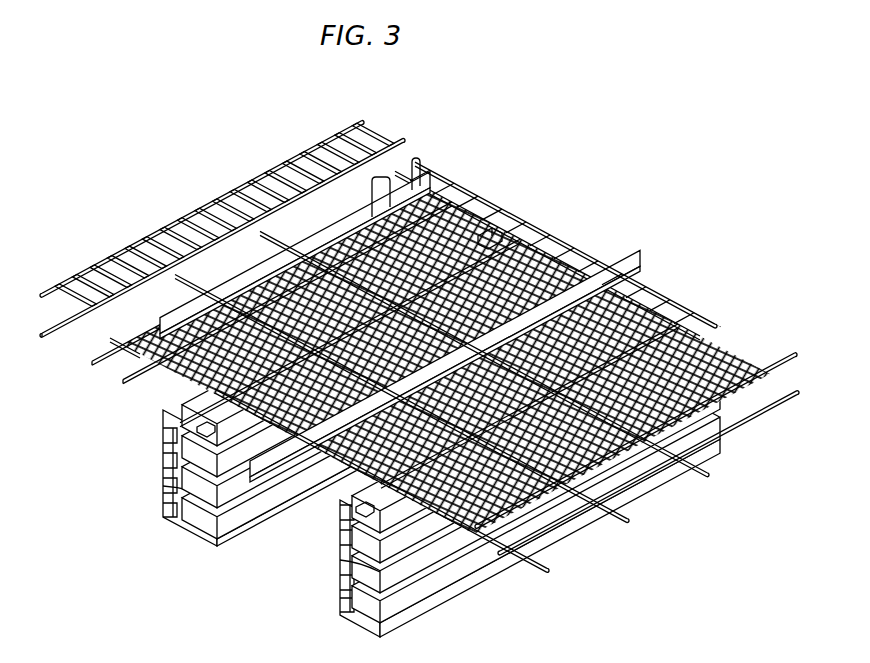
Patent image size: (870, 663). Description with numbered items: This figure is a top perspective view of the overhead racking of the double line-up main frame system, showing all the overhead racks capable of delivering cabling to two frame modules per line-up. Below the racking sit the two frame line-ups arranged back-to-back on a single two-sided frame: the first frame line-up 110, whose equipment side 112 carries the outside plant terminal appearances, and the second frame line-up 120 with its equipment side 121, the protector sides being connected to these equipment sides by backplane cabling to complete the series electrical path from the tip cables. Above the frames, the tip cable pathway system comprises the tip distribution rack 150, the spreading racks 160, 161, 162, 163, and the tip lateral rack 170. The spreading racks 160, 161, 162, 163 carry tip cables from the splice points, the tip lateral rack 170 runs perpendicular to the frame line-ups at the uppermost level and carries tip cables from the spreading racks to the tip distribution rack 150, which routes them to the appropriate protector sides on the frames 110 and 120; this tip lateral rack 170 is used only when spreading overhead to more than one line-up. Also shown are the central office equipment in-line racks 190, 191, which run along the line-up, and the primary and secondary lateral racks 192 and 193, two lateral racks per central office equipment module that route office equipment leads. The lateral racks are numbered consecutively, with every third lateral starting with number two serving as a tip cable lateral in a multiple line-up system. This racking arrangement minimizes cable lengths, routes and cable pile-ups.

The first frame line-up 110 is at (352, 622).
The equipment side 112 is at (340, 578).
The second frame line-up 120 is at (190, 533).
The equipment side 121 is at (240, 523).
The tip distribution rack 150 is at (795, 350).
The spreading rack 160 is at (799, 390).
The spreading rack 161 is at (677, 306).
The spreading rack 162 is at (578, 262).
The spreading rack 163 is at (487, 230).
The tip lateral rack 170 is at (510, 212).
The central office equipment in-line rack 190 is at (172, 222).
The central office equipment in-line rack 191 is at (160, 225).
The primary lateral rack 192 is at (450, 174).
The secondary lateral rack 193 is at (130, 348).